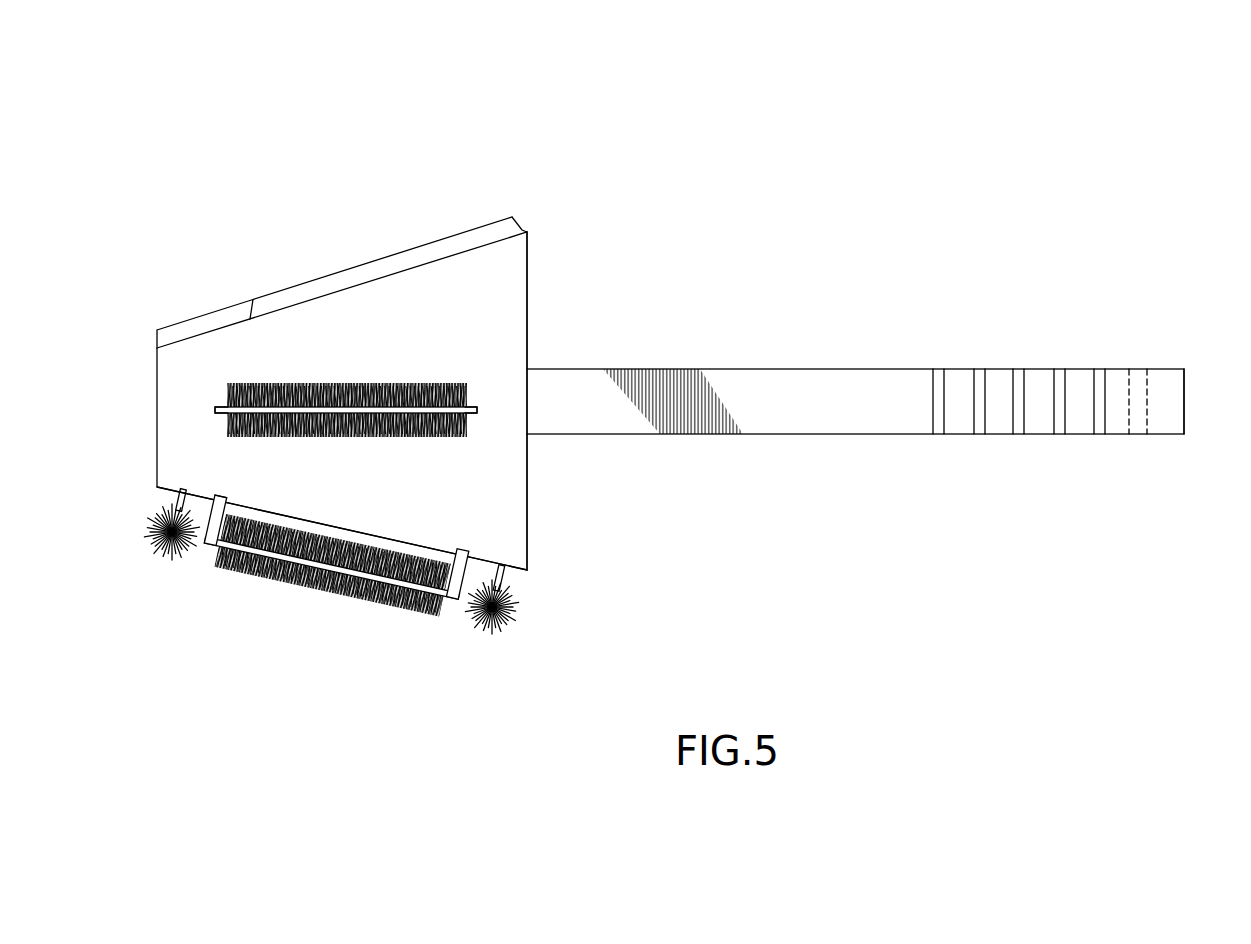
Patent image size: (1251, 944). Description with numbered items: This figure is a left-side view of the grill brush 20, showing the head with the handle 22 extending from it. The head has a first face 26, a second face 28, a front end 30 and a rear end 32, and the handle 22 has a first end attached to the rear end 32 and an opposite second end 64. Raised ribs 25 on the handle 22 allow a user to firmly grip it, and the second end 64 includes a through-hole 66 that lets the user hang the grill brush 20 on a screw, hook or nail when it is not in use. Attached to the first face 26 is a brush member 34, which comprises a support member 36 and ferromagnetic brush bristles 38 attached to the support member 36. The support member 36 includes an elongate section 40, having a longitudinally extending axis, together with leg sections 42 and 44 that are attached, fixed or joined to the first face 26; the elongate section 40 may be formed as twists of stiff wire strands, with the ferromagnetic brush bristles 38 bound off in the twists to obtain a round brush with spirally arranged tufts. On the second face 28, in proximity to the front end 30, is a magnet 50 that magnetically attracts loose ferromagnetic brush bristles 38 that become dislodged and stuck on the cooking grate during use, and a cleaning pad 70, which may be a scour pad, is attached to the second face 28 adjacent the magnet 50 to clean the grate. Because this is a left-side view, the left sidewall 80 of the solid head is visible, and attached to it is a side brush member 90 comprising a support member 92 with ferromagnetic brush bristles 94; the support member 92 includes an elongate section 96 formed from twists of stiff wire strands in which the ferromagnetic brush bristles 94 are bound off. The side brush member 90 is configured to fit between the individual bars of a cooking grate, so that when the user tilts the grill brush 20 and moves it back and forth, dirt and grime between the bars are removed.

The grill brush 20 is at (585, 133).
The handle 22 is at (781, 368).
The raised ribs 25 is at (939, 434).
The first face 26 is at (520, 575).
The second face 28 is at (521, 228).
The front end 30 is at (157, 412).
The rear end 32 is at (527, 515).
The brush member 34 is at (170, 553).
The support member 36 is at (455, 605).
The ferromagnetic brush bristles 38 is at (155, 555).
The elongate section 40 is at (207, 557).
The leg section 42 is at (470, 560).
The leg section 44 is at (207, 510).
The magnet 50 is at (202, 313).
The second end 64 is at (1184, 404).
The through-hole 66 is at (1140, 380).
The cleaning pad 70 is at (345, 265).
The left sidewall 80 is at (510, 317).
The side brush member 90 is at (343, 382).
The support member 92 is at (213, 410).
The ferromagnetic brush bristles 94 is at (287, 383).
The elongate section 96 is at (473, 415).